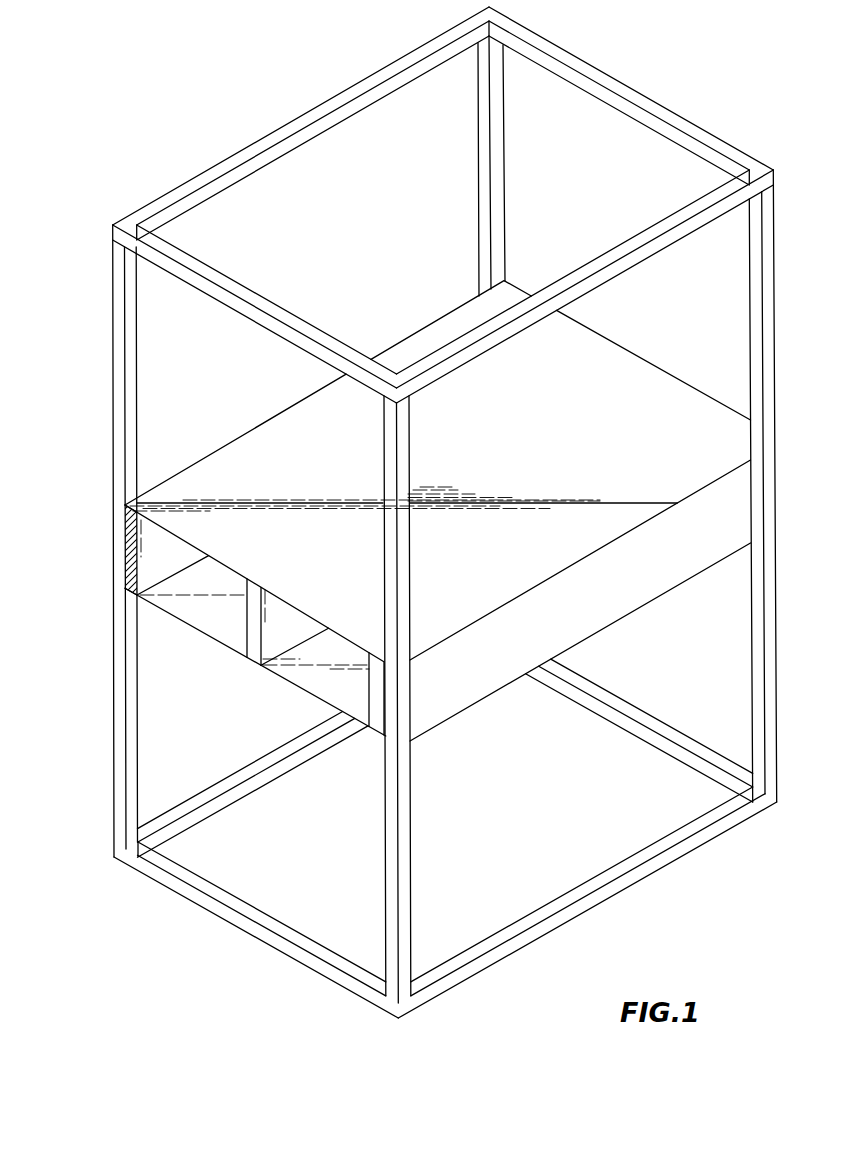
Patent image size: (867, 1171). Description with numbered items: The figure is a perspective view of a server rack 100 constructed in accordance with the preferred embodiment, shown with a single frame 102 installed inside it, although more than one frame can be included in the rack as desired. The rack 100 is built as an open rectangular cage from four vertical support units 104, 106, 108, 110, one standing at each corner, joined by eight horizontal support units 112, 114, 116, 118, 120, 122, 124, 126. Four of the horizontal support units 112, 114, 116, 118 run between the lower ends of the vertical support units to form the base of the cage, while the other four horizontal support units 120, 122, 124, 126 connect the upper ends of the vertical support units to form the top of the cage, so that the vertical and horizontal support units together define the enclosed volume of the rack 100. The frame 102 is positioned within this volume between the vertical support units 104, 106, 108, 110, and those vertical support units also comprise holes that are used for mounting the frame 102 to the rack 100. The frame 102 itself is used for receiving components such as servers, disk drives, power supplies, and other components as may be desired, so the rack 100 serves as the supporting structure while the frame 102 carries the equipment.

The server rack 100 is at (183, 145).
The frame 102 is at (630, 620).
The vertical support unit 104 is at (420, 826).
The vertical support unit 106 is at (778, 652).
The vertical support unit 108 is at (478, 178).
The vertical support unit 110 is at (112, 412).
The horizontal support unit 112 is at (260, 940).
The horizontal support unit 114 is at (660, 887).
The horizontal support unit 116 is at (645, 708).
The horizontal support unit 118 is at (265, 745).
The horizontal support unit 120 is at (265, 330).
The horizontal support unit 122 is at (622, 282).
The horizontal support unit 124 is at (645, 92).
The horizontal support unit 126 is at (330, 95).